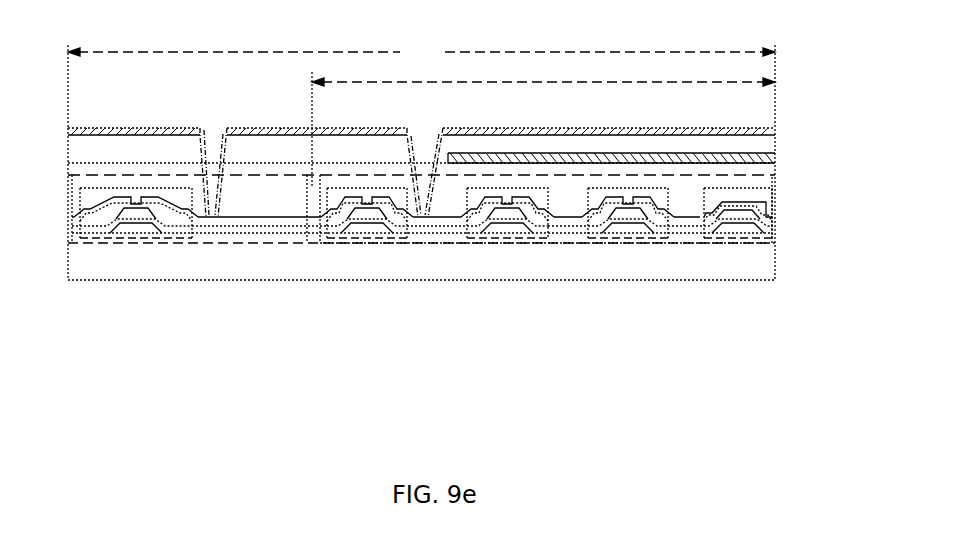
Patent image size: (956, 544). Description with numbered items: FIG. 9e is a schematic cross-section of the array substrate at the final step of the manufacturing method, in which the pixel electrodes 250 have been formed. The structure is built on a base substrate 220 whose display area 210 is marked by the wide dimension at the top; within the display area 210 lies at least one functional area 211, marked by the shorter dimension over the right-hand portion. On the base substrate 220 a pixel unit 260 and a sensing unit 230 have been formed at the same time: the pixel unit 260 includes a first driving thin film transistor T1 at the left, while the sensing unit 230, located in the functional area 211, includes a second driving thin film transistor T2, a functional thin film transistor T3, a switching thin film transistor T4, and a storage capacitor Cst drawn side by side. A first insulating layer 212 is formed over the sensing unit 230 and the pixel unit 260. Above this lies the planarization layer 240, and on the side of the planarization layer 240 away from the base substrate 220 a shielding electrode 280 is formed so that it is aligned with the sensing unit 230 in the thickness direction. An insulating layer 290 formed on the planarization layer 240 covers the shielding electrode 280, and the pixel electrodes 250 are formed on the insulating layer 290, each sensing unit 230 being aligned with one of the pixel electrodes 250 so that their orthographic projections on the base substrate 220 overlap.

The display area 210 is at (421, 44).
The functional area 211 is at (543, 74).
The first insulating layer 212 is at (757, 200).
The base substrate 220 is at (776, 265).
The sensing unit 230 is at (772, 205).
The planarization layer 240 is at (764, 160).
The pixel electrode 250 is at (85, 127).
The pixel unit 260 is at (85, 174).
The shielding electrode 280 is at (770, 170).
The insulating layer 290 is at (752, 148).
The first driving thin film transistor T1 is at (150, 238).
The second driving thin film transistor T2 is at (380, 238).
The functional thin film transistor T3 is at (508, 238).
The switching thin film transistor T4 is at (628, 238).
The storage capacitor Cst is at (728, 238).